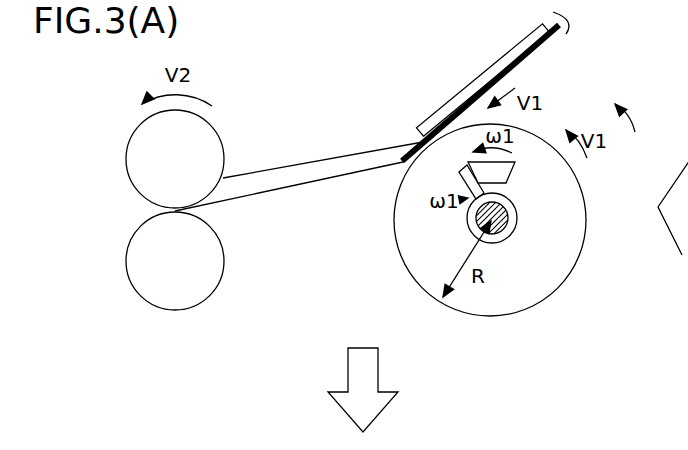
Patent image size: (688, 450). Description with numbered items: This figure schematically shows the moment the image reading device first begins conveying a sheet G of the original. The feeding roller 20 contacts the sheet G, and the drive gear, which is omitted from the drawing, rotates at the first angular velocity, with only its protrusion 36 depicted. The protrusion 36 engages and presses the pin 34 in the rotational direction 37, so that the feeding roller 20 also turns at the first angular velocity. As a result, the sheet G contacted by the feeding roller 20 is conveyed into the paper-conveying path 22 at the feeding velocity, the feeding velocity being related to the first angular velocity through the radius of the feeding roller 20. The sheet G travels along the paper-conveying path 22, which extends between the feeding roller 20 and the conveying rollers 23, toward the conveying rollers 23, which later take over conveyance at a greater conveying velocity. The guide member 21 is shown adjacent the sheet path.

The feeding roller 20 is at (530, 293).
The transfer guide plate 21 is at (453, 97).
The paper-conveying path 22 is at (301, 165).
The conveying rollers 23 is at (138, 167).
The pin 34 is at (460, 168).
The protrusion 36 is at (510, 177).
The rotational direction 37 is at (638, 117).
The sheet G is at (540, 42).